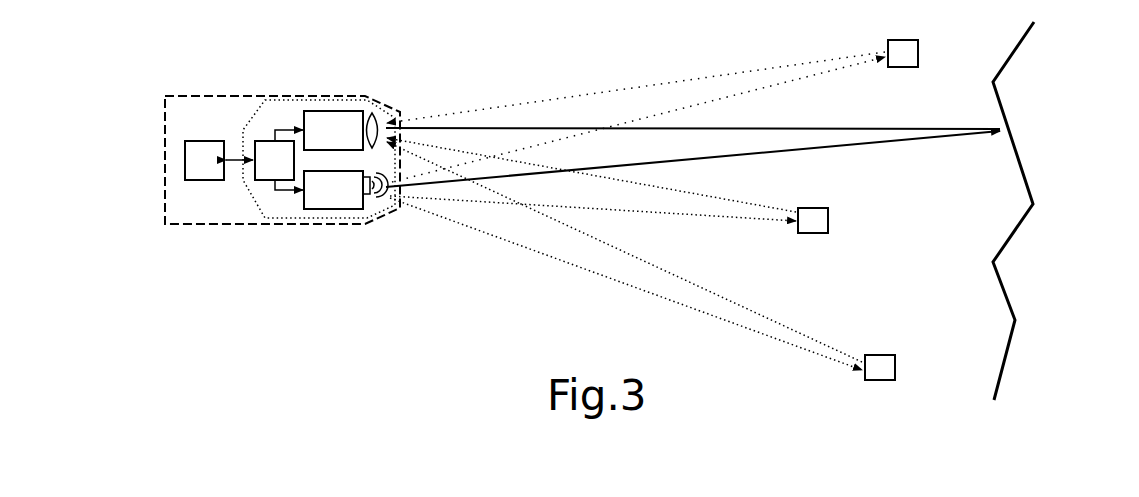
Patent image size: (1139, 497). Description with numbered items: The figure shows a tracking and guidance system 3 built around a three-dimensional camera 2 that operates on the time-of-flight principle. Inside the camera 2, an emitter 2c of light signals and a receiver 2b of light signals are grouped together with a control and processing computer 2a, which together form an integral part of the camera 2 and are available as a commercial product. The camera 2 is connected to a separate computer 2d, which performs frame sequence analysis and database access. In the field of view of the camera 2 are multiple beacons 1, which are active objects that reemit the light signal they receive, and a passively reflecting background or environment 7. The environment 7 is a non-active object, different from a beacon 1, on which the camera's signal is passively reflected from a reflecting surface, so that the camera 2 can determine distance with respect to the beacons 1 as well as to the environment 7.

The beacon 1 is at (858, 210).
The three-dimensional camera 2 is at (319, 160).
The control and processing computer 2a is at (279, 160).
The receiver 2b is at (652, 207).
The emitter 2c is at (652, 213).
The computer 2d is at (219, 160).
The tracking and guidance system 3 is at (282, 160).
The passively reflecting environment 7 is at (991, 232).